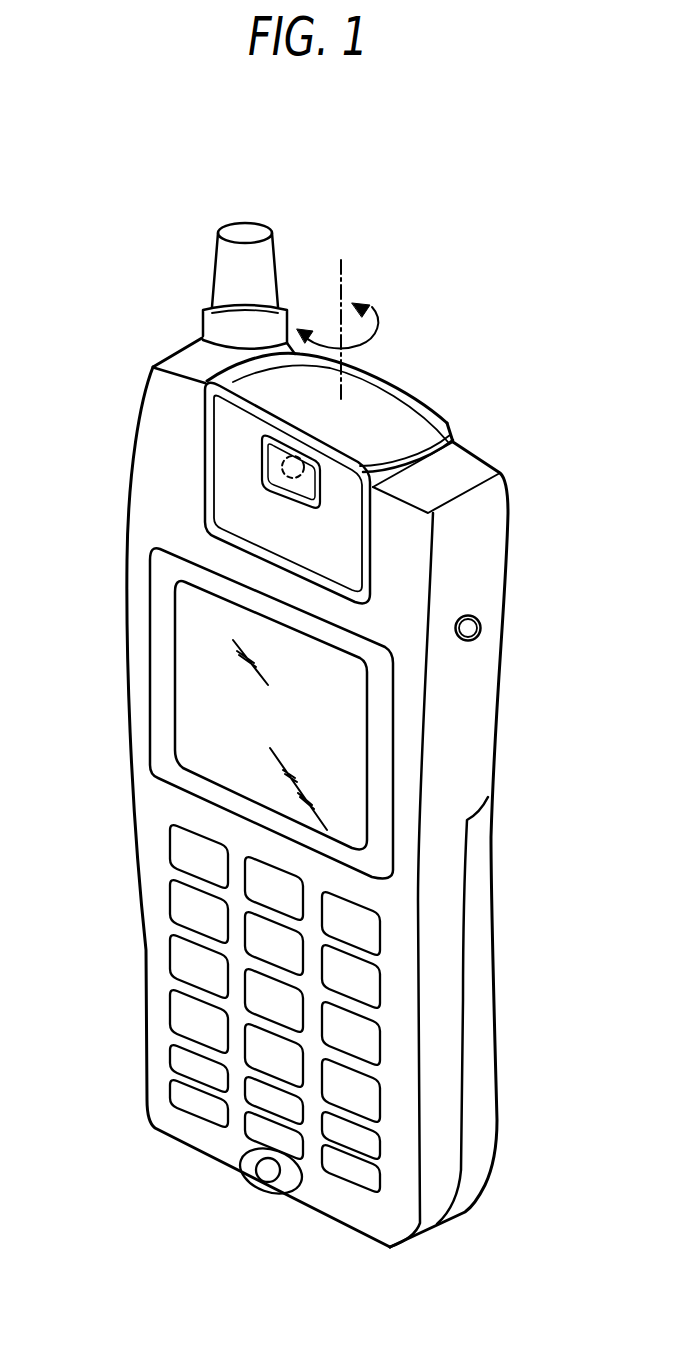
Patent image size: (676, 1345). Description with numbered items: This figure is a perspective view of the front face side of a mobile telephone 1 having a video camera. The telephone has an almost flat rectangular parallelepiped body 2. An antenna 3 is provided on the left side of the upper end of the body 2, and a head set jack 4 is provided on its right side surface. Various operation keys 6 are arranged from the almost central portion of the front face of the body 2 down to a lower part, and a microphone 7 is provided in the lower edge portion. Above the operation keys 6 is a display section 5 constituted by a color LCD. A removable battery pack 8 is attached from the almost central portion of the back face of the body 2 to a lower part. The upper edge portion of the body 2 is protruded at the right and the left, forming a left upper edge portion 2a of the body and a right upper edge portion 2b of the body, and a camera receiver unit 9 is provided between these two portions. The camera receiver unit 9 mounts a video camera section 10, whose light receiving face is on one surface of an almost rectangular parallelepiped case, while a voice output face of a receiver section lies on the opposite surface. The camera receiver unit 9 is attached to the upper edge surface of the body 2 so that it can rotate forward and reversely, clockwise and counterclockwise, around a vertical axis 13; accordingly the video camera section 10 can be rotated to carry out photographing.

The mobile telephone 1 is at (262, 1220).
The body 2 is at (473, 727).
The left upper edge portion of the body 2a is at (165, 413).
The right upper edge portion of the body 2b is at (473, 537).
The antenna 3 is at (252, 230).
The head set jack 4 is at (468, 629).
The display section 5 is at (183, 695).
The operation keys 6 is at (187, 965).
The microphone 7 is at (266, 1173).
The battery pack 8 is at (473, 955).
The camera receiver unit 9 is at (377, 395).
The video camera section 10 is at (303, 457).
The vertical axis 13 is at (343, 273).